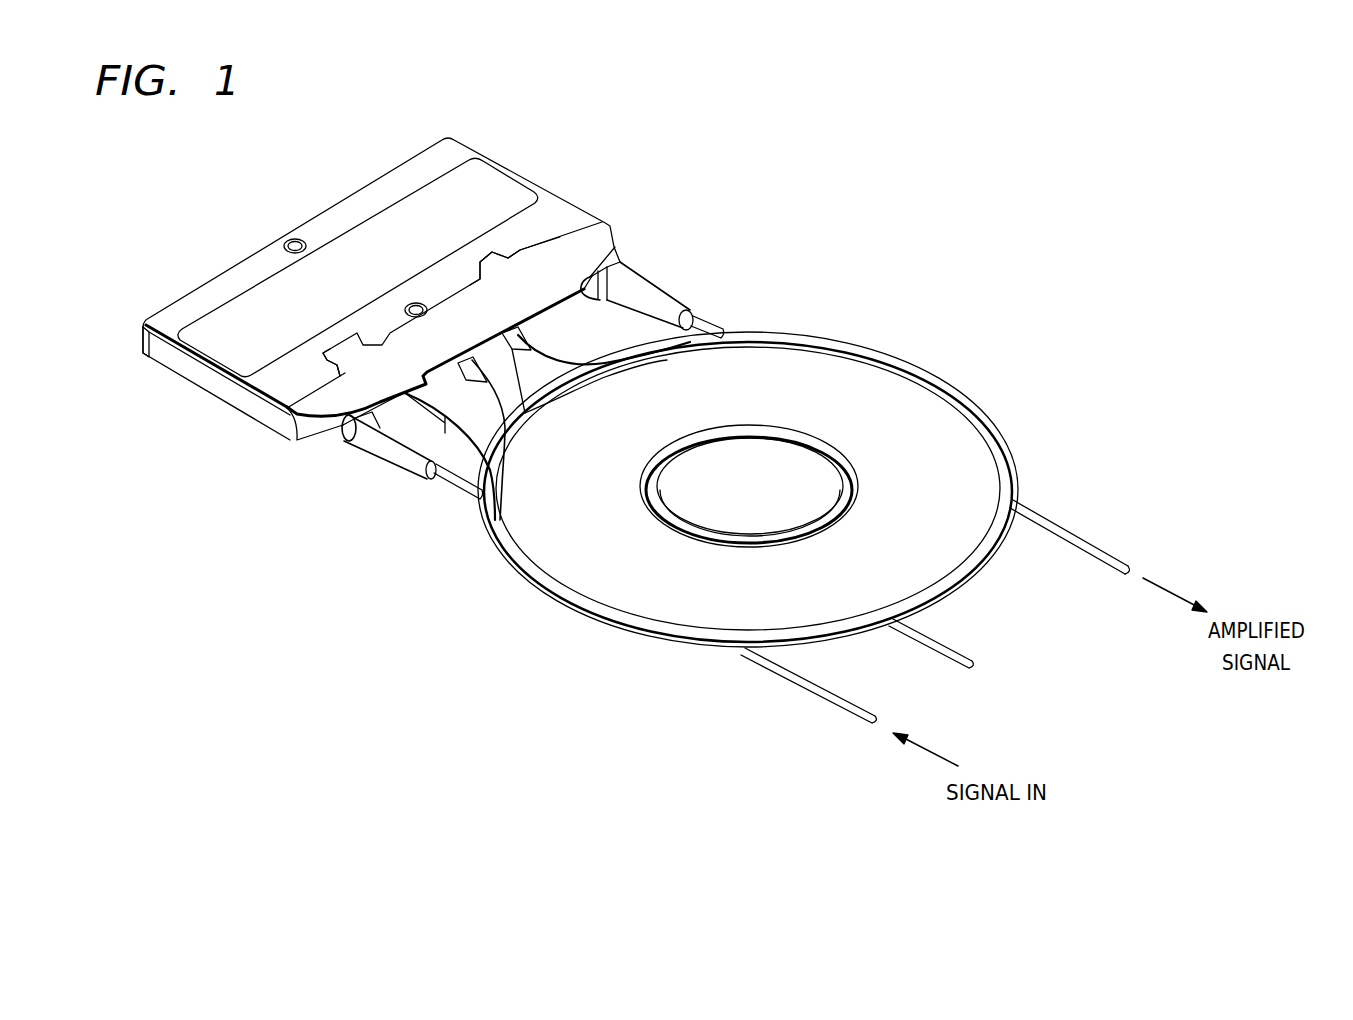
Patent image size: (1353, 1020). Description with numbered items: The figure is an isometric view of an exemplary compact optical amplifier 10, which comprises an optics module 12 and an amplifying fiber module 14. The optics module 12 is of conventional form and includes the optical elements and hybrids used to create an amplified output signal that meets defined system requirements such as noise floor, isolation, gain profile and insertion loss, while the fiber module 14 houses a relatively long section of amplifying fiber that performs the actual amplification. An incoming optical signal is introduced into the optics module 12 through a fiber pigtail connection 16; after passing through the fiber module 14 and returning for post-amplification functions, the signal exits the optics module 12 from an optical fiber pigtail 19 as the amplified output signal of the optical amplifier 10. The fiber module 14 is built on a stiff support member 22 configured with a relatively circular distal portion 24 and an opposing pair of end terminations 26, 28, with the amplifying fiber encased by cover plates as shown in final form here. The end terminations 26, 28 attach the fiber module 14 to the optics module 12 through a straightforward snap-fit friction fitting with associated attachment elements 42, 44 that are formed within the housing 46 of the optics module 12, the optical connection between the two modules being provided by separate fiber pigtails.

The compact optical amplifier 10 is at (226, 187).
The optics module 12 is at (278, 383).
The amplifying fiber module 14 is at (905, 357).
The fiber pigtail connection 16 is at (395, 448).
The optical fiber pigtail 19 is at (640, 290).
The stiff support member 22 is at (497, 593).
The circular distal portion 24 is at (655, 625).
The end termination 26 is at (362, 343).
The end termination 28 is at (510, 255).
The attachment element 42 is at (328, 352).
The attachment element 44 is at (487, 258).
The housing 46 is at (163, 352).